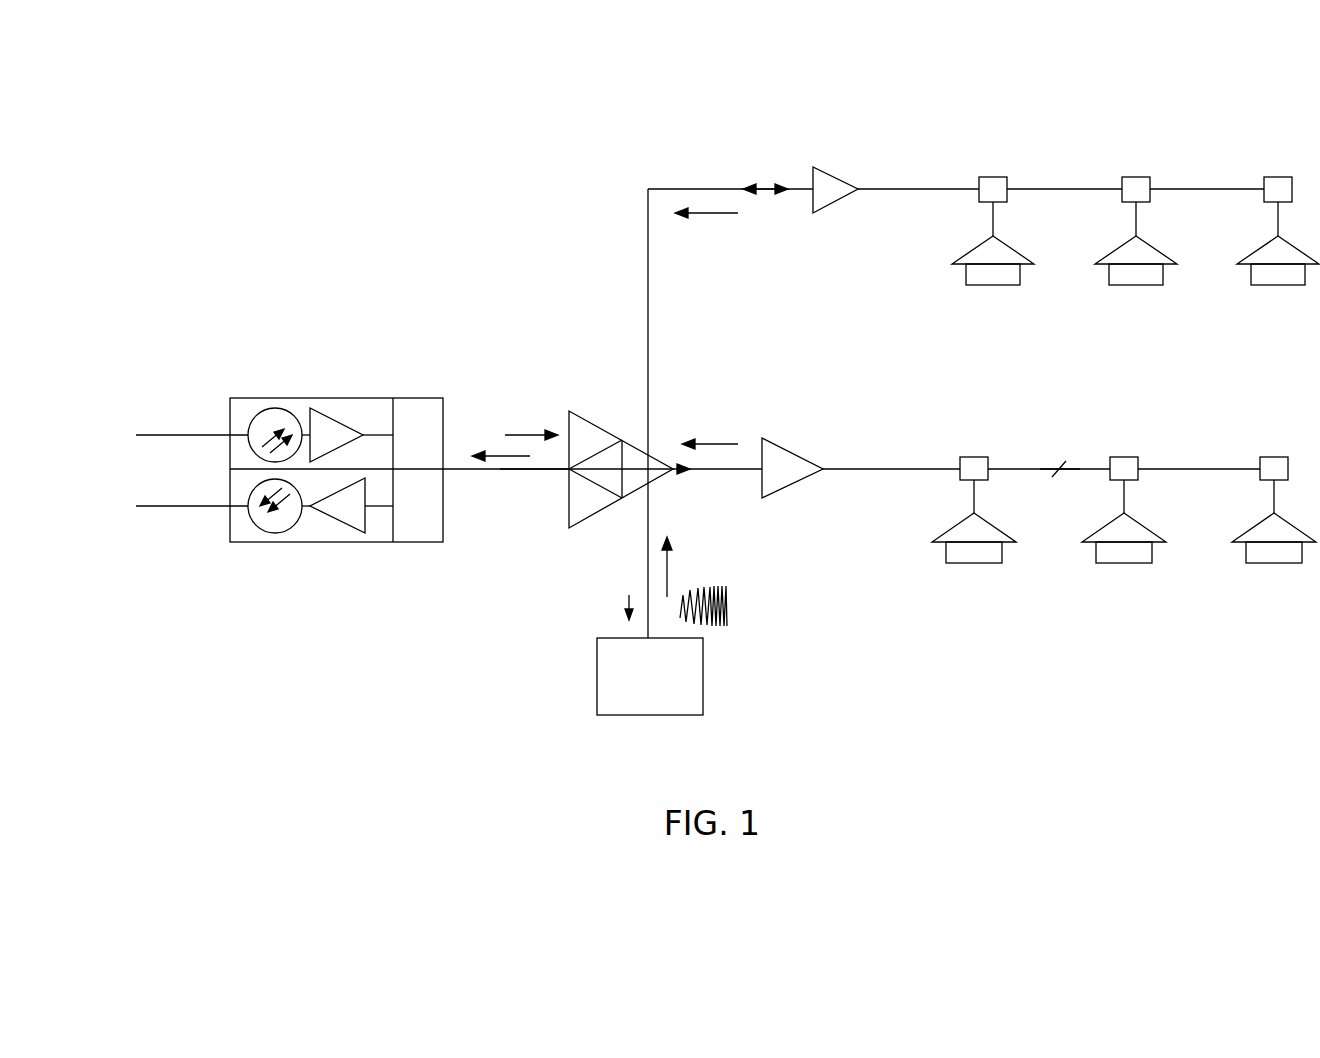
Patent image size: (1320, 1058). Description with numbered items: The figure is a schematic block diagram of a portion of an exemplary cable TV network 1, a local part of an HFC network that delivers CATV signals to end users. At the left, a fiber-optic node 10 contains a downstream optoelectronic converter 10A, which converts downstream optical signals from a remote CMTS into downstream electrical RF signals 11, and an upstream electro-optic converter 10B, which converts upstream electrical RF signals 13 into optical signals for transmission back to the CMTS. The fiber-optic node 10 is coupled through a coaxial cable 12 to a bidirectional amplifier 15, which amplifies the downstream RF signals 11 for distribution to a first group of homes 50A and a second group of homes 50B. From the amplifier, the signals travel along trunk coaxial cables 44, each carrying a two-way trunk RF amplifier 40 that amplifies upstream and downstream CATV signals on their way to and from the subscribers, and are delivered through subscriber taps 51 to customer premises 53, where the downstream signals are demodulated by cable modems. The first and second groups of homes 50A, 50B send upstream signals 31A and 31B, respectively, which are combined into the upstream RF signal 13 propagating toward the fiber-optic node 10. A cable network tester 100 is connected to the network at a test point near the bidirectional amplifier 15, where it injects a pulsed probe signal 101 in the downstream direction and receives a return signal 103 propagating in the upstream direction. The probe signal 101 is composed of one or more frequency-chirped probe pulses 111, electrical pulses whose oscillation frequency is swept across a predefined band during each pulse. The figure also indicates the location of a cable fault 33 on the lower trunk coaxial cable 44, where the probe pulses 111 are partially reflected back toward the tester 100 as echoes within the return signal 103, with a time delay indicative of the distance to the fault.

The cable TV network 1 is at (562, 165).
The fiber-optic node 10 is at (312, 357).
The downstream optoelectronic converter 10A is at (383, 398).
The upstream electro-optic converter 10B is at (298, 543).
The downstream electrical RF signals 11 is at (516, 432).
The coaxial cable 12 is at (543, 470).
The upstream electrical RF signals 13 is at (482, 446).
The bidirectional amplifier 15 is at (580, 411).
The upstream signals from first group of homes 31A is at (720, 222).
The upstream signals from second group of homes 31B is at (712, 437).
The cable fault 33 is at (1060, 462).
The two-way trunk RF amplifier 40 is at (845, 208).
The trunk coaxial cable 44 is at (913, 187).
The first group of homes 50A is at (1063, 314).
The second group of homes 50B is at (1068, 600).
The subscriber tap 51 is at (979, 196).
The customer premises 53 is at (966, 274).
The cable network tester 100 is at (597, 680).
The probe signal 101 is at (678, 552).
The return signal 103 is at (620, 605).
The frequency-chirped probe pulse 111 is at (730, 598).